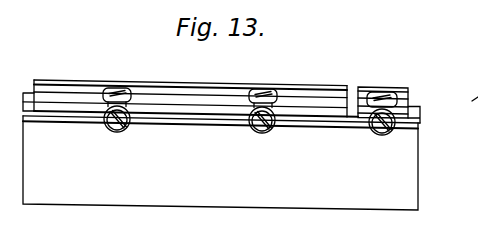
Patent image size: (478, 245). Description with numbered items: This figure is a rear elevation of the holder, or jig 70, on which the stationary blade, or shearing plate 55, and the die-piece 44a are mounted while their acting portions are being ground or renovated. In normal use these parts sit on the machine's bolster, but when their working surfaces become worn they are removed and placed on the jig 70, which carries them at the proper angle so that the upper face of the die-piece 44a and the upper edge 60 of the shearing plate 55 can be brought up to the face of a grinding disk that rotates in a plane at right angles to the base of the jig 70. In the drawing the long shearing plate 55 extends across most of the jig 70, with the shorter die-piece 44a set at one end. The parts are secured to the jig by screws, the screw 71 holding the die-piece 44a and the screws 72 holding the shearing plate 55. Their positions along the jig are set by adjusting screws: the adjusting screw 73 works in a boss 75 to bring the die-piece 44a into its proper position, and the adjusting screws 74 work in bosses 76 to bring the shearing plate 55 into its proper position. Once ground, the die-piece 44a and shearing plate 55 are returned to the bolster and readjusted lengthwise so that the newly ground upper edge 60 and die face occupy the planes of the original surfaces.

The jig 70 is at (221, 163).
The stationary blade, or shearing plate 55 is at (84, 82).
The die-piece 44a is at (405, 93).
The boss 75 is at (412, 106).
The upper edge of the stationary blade, or shearing plate 60 is at (468, 104).
The adjusting screw 74 is at (118, 133).
The adjusting screw 73 is at (385, 135).
The screw 72 is at (118, 89).
The screw 71 is at (377, 93).
The boss 76 is at (133, 101).